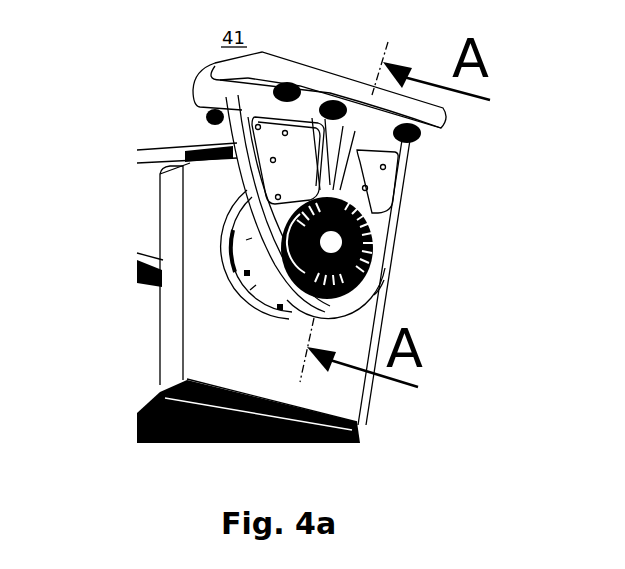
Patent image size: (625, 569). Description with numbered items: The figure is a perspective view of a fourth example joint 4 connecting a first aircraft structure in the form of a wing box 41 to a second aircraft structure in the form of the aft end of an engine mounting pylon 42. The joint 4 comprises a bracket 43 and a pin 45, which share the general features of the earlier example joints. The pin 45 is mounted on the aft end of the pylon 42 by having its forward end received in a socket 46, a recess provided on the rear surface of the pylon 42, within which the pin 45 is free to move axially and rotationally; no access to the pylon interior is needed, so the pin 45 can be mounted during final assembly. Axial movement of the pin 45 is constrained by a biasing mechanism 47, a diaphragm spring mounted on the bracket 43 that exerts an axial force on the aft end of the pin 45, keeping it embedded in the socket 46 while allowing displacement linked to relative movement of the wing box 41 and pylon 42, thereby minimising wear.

The joint 4 is at (452, 281).
The wing box 41 is at (319, 121).
The engine mounting pylon 42 is at (217, 347).
The bracket 43 is at (278, 151).
The pin 45 is at (334, 243).
The socket 46 is at (273, 260).
The biasing mechanism 47 is at (370, 218).